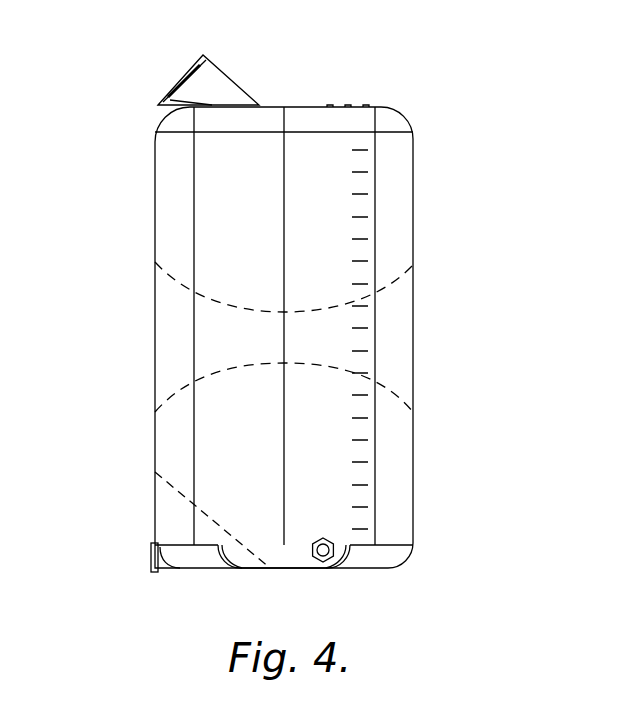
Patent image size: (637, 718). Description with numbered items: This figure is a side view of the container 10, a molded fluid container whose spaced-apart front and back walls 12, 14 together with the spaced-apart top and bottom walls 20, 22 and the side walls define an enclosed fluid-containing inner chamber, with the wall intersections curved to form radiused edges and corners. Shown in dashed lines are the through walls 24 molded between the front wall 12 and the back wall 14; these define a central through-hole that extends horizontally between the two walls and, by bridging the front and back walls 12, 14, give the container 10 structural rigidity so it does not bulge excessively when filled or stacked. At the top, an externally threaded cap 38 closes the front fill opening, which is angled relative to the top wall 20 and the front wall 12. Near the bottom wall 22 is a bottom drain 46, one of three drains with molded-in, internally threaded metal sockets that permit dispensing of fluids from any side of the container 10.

The container 10 is at (402, 82).
The front wall 12 is at (155, 210).
The back wall 14 is at (413, 230).
The top wall 20 is at (292, 107).
The bottom wall 22 is at (275, 568).
The through walls 24 is at (248, 303).
The cap 38 is at (170, 85).
The bottom drain 46 is at (330, 558).